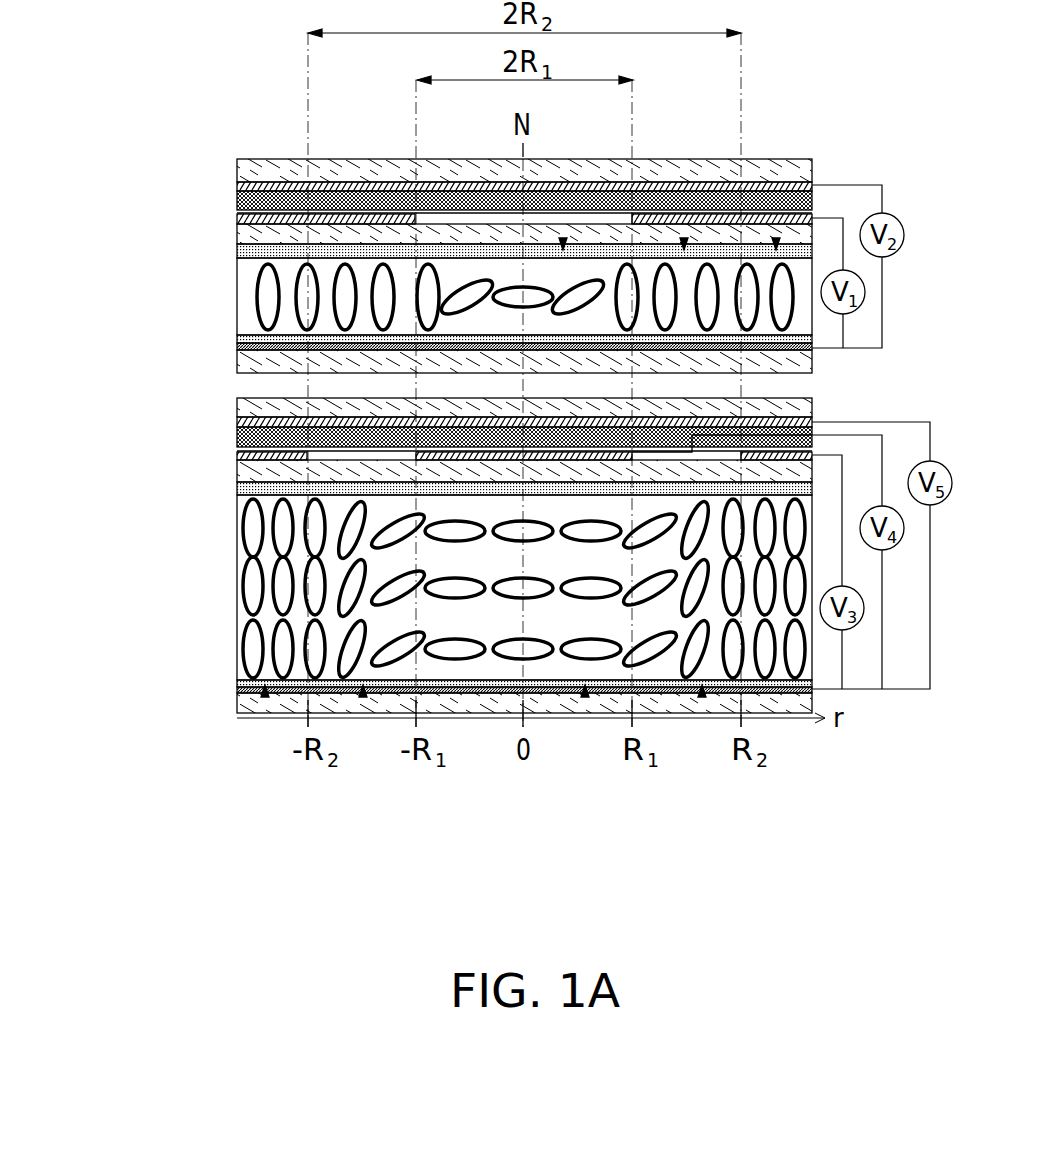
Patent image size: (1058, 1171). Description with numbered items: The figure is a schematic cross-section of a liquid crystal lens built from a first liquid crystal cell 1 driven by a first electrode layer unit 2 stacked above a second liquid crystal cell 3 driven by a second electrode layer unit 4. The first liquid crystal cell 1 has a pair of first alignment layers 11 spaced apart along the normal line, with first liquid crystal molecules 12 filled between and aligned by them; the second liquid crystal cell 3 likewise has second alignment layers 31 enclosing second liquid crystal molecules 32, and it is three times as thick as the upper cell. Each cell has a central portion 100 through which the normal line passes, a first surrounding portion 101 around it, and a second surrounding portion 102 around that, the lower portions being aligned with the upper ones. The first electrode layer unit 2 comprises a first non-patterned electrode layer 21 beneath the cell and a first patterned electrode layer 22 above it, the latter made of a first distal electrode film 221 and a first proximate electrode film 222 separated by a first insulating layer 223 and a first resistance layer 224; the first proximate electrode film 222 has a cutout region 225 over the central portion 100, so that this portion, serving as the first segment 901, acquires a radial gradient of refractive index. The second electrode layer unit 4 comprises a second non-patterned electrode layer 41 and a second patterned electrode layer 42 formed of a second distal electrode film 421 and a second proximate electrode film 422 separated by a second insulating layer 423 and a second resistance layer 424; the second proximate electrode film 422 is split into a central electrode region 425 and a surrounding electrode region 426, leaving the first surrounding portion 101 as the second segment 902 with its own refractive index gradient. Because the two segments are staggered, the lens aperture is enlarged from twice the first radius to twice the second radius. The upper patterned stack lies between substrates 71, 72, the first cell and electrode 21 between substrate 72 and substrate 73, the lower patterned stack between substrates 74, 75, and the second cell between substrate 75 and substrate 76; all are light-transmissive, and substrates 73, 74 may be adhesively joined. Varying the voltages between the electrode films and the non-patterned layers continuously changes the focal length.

The first liquid crystal cell 1 is at (132, 297).
The first electrode layer unit 2 is at (137, 112).
The first patterned electrode layer 22 is at (503, 165).
The first distal electrode film 221 is at (237, 180).
The first insulating layer 223 is at (237, 188).
The first resistance layer 224 is at (237, 200).
The first proximate electrode film 222 is at (237, 219).
The cutout region 225 is at (415, 214).
The substrate 72 is at (237, 232).
The first alignment layers 11 is at (237, 252).
The first liquid crystal molecules 12 is at (255, 306).
The first non-patterned electrode layer 21 is at (237, 349).
The substrate 71 is at (805, 168).
The substrate 73 is at (808, 360).
The substrate 74 is at (808, 406).
The second liquid crystal cell 3 is at (138, 560).
The second electrode layer unit 4 is at (120, 385).
The second patterned electrode layer 42 is at (515, 591).
The second distal electrode film 421 is at (237, 418).
The second insulating layer 423 is at (237, 433).
The second resistance layer 424 is at (237, 446).
The second proximate electrode film 422 is at (237, 457).
The surrounding electrode region 426 is at (614, 619).
The central electrode region 425 is at (458, 461).
The substrate 75 is at (237, 470).
The second alignment layers 31 is at (237, 489).
The second liquid crystal molecules 32 is at (237, 586).
The second non-patterned electrode layer 41 is at (237, 689).
The substrate 76 is at (237, 700).
The central portion 100 is at (586, 447).
The first segment 901 is at (589, 165).
The second segment 902 is at (702, 716).
The first surrounding portion 101 is at (684, 240).
The second surrounding portion 102 is at (776, 240).